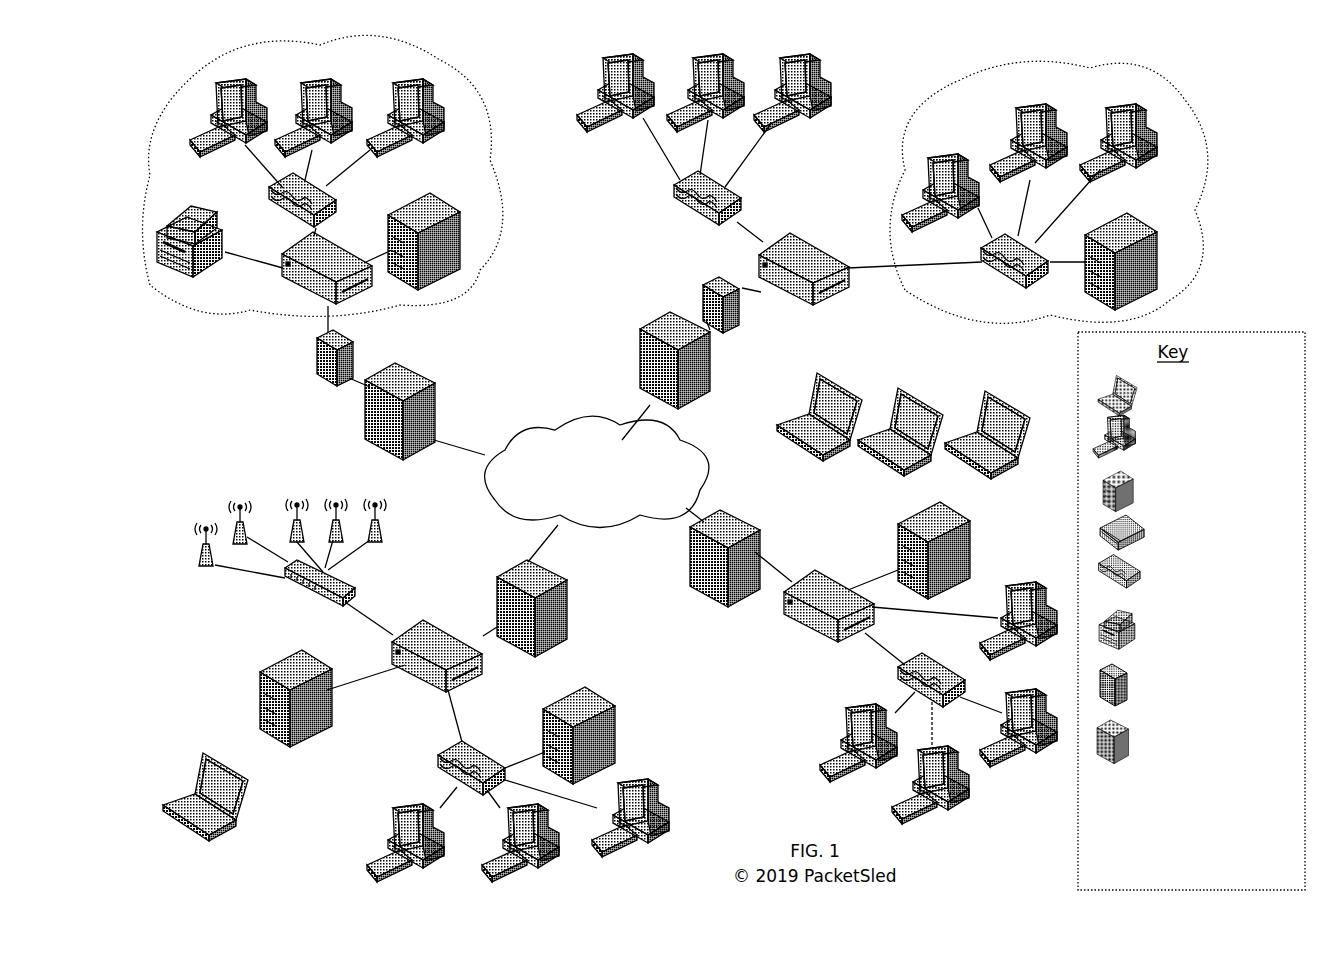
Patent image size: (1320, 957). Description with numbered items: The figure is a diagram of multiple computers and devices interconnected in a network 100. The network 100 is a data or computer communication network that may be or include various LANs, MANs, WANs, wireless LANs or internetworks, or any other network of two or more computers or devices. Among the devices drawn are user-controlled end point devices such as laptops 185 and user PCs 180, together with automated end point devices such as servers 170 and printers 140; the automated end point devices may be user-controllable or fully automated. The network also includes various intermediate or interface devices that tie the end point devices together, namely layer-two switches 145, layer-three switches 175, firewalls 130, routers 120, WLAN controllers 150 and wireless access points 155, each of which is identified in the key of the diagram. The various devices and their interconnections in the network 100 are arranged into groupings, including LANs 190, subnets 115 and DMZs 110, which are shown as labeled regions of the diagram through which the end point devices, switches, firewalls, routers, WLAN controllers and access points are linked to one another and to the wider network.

The network 100 is at (560, 372).
The DMZ 110 is at (190, 358).
The subnet 115 is at (908, 292).
The router 120 is at (1170, 742).
The firewall 130 is at (1172, 685).
The printer 140 is at (1171, 629).
The layer 2 switch 145 is at (1191, 571).
The WLAN controller 150 is at (780, 691).
The wireless access point 155 is at (730, 689).
The server 170 is at (1170, 491).
The layer 3 switch 175 is at (1191, 532).
The user PC 180 is at (1175, 436).
The laptop 185 is at (1168, 395).
The LAN 190 is at (820, 715).